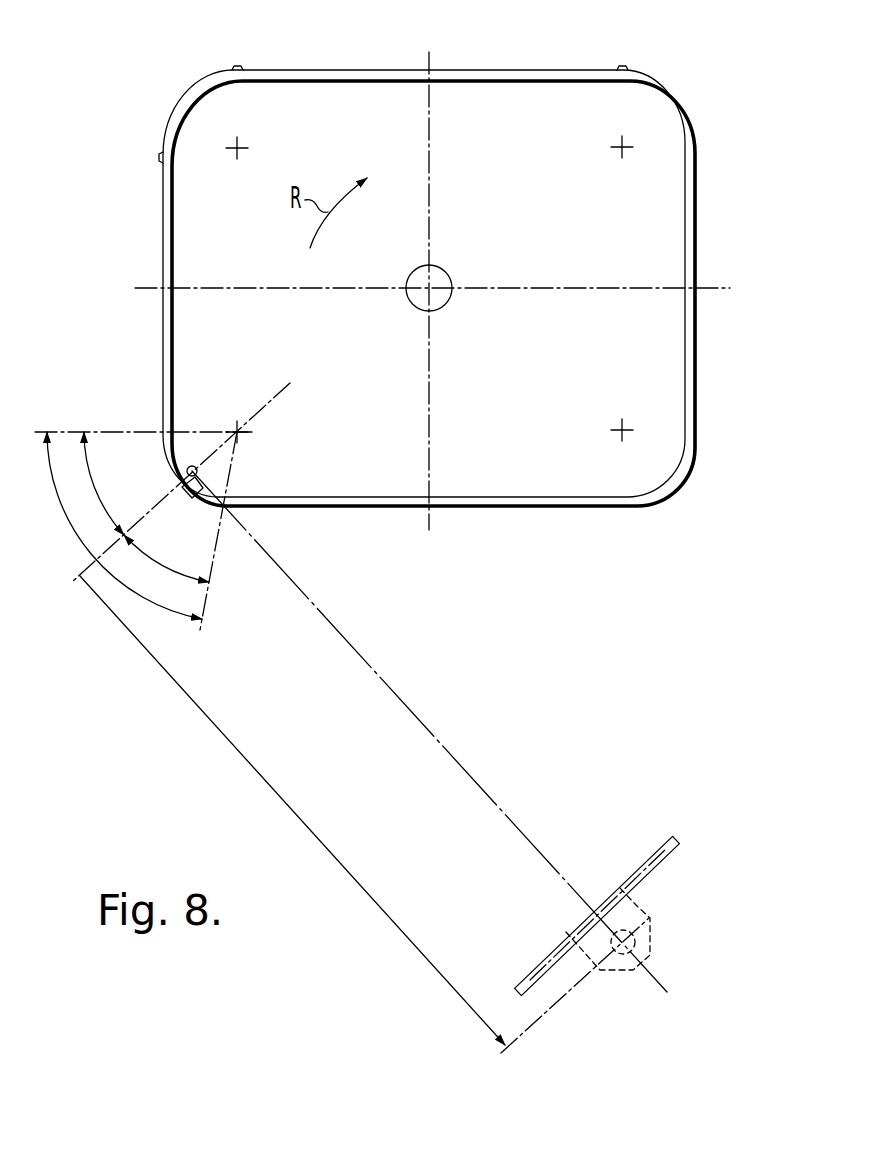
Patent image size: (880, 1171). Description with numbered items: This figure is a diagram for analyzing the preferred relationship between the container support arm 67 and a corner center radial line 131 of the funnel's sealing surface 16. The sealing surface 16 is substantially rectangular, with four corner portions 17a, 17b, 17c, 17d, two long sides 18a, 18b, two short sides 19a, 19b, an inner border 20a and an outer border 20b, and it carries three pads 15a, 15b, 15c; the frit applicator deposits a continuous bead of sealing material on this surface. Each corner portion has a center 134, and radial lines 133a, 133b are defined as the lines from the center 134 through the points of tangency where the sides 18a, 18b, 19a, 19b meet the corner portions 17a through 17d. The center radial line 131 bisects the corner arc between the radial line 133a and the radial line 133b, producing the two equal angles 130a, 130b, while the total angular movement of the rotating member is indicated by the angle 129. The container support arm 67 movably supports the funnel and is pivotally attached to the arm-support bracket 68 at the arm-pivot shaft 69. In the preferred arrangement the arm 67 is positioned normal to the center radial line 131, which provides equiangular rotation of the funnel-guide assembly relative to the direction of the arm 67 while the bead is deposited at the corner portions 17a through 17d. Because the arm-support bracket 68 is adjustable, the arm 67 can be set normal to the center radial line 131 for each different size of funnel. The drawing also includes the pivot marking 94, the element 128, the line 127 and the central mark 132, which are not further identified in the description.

The pad 15a is at (628, 70).
The pad 15b is at (243, 69).
The pad 15c is at (163, 157).
The sealing surface 16 is at (697, 352).
The corner portion 17a is at (681, 102).
The corner portion 17b is at (196, 92).
The corner portion 17c is at (186, 470).
The corner portion 17d is at (668, 486).
The long side 18a is at (455, 70).
The long side 18b is at (487, 508).
The short side 19a is at (697, 238).
The short side 19b is at (163, 240).
The inner border 20a is at (328, 495).
The outer border 20b is at (338, 507).
The container support arm 67 is at (420, 721).
The arm-support bracket 68 is at (632, 900).
The arm-pivot shaft 69 is at (636, 942).
The pivot pin 94 is at (203, 476).
The arm 127 is at (300, 818).
The stop block 128 is at (205, 491).
The angle 129 is at (77, 543).
The angle 130a is at (104, 509).
The angle 130b is at (162, 550).
The corner center radial line 131 is at (263, 408).
The center hole 132 is at (431, 287).
The radial line 133a is at (64, 434).
The radial line 133b is at (209, 590).
The center 134 is at (243, 150).